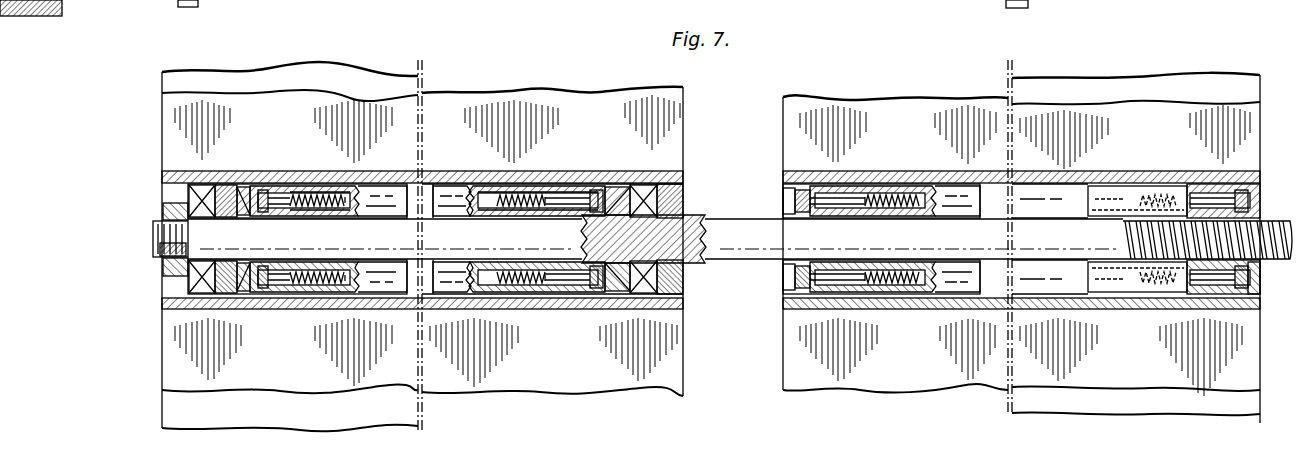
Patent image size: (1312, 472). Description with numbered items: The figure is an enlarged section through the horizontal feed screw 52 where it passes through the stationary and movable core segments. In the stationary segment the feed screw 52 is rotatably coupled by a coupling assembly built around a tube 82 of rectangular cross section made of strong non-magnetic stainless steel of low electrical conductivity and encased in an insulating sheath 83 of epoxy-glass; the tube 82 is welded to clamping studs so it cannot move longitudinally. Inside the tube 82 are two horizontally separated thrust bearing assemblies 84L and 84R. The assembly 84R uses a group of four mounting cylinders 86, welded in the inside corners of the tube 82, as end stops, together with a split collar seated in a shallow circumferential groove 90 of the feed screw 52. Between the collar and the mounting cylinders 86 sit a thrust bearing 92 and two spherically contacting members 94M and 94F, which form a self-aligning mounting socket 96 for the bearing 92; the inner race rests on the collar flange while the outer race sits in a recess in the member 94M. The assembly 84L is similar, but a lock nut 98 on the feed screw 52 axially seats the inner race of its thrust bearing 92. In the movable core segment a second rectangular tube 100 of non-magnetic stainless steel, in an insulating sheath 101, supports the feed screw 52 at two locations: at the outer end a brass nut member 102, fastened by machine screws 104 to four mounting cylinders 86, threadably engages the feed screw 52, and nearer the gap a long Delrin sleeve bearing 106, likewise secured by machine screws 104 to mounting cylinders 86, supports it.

The feed screw 52 is at (302, 247).
The tube 82 is at (441, 173).
The insulating sheath 83 is at (480, 172).
The thrust bearing assembly 84L is at (263, 111).
The thrust bearing assembly 84R is at (628, 110).
The mounting cylinders 86 is at (383, 270).
The circumferential groove 90 is at (704, 238).
The thrust bearing 92 is at (190, 189).
The spherically contacting member 94F is at (262, 192).
The spherically contacting member 94M is at (240, 186).
The self-aligning mounting socket 96 is at (318, 150).
The lock nut 98 is at (163, 267).
The tube 100 is at (1145, 173).
The insulating sheath 101 is at (900, 172).
The nut member 102 is at (1253, 292).
The machine screws 104 is at (847, 198).
The sleeve bearing 106 is at (835, 292).